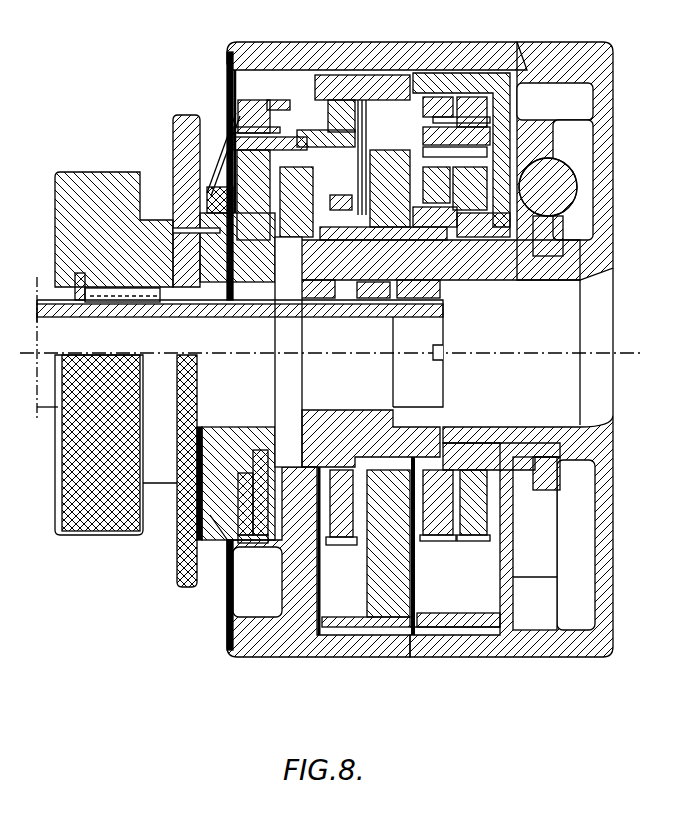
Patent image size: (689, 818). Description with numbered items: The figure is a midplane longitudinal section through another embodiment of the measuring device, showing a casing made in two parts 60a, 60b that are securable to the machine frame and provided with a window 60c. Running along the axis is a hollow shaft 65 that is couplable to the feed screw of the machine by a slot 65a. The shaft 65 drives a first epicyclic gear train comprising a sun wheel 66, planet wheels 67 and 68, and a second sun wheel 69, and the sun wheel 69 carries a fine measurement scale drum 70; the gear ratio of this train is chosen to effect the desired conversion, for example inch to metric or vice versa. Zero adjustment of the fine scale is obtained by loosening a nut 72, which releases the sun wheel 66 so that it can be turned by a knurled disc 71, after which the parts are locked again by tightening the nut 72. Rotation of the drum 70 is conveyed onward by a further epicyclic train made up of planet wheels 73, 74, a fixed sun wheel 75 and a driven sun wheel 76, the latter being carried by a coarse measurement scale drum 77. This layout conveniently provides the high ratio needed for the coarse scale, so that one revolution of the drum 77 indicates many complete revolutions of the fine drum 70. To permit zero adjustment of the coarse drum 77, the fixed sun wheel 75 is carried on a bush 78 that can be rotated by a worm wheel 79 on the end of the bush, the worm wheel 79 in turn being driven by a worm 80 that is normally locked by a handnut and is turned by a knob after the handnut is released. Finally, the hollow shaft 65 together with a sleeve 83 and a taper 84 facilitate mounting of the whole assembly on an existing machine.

The casing part 60a is at (355, 645).
The casing part 60b is at (520, 645).
The window 60c is at (389, 54).
The hollow shaft 65 is at (44, 308).
The slot 65a is at (441, 350).
The sun wheel 66 is at (253, 543).
The planet wheel 67 is at (245, 112).
The planet wheel 68 is at (340, 108).
The sun wheel 69 is at (342, 545).
The fine measurement scale drum 70 is at (378, 598).
The knurled disc 71 is at (184, 588).
The nut 72 is at (96, 533).
The planet wheel 73 is at (441, 100).
The planet wheel 74 is at (480, 110).
The fixed sun wheel 75 is at (437, 542).
The driven sun wheel 76 is at (476, 542).
The coarse measurement scale drum 77 is at (452, 622).
The bush 78 is at (503, 450).
The worm wheel 79 is at (547, 490).
The worm 80 is at (557, 168).
The sleeve 83 is at (488, 272).
The taper 84 is at (593, 282).